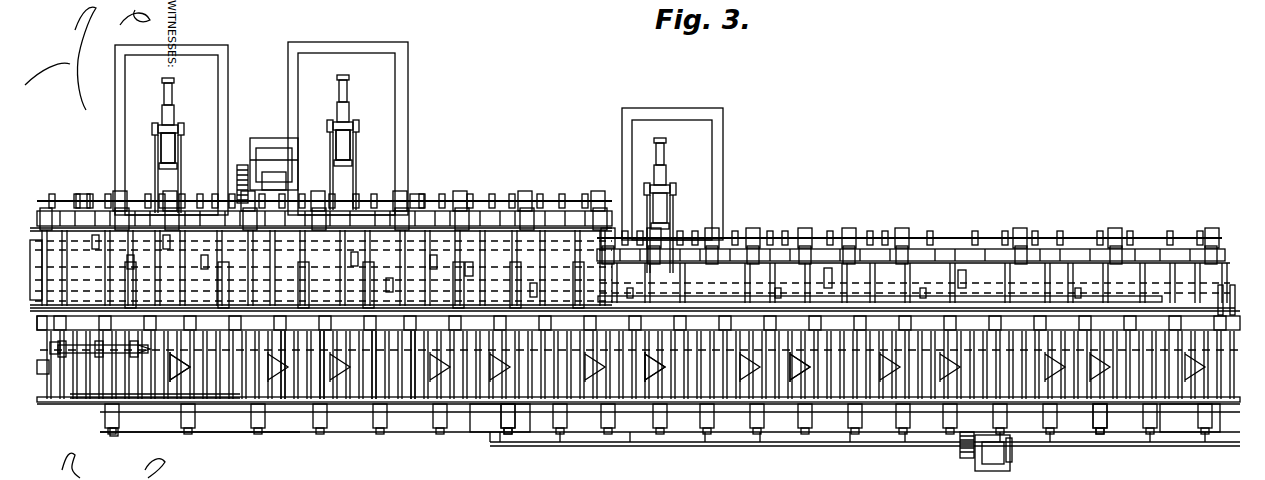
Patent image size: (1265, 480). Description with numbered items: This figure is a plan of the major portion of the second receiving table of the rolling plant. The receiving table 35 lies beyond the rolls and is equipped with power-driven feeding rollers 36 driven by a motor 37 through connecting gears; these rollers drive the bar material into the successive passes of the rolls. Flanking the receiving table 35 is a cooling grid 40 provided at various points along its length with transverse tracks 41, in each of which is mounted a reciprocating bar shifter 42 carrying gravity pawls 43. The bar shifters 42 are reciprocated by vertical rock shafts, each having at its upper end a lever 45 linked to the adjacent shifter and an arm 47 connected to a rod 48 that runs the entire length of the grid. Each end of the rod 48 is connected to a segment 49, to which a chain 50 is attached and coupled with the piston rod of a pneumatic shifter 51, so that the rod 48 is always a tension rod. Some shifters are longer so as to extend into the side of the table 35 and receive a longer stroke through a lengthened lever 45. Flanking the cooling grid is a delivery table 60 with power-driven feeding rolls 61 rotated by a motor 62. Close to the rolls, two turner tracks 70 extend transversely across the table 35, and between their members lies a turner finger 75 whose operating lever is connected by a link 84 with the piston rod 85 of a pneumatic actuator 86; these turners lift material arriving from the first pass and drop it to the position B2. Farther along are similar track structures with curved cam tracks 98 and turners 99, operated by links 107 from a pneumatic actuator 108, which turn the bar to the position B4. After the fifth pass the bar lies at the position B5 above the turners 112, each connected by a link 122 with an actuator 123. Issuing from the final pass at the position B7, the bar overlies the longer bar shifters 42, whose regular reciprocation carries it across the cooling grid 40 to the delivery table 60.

The receiving table 35 is at (417, 205).
The feeding rollers 36 is at (300, 238).
The motor 37 is at (268, 150).
The cooling grid 40 is at (375, 388).
The transverse tracks 41 is at (306, 392).
The bar shifter 42 is at (330, 392).
The gravity pawls 43 is at (205, 388).
The lever 45 is at (785, 372).
The arm 47 is at (640, 350).
The rod 48 is at (408, 355).
The segment 49 is at (172, 372).
The chain 50 is at (155, 360).
The pneumatic shifter 51 is at (78, 356).
The delivery table 60 is at (487, 422).
The feeding rolls 61 is at (518, 428).
The motor 62 is at (988, 452).
The turner tracks 70 is at (83, 197).
The turner finger 75 is at (96, 243).
The link 84 is at (160, 150).
The piston rod 85 is at (170, 115).
The pneumatic actuator 86 is at (175, 168).
The curved cam tracks 98 is at (243, 170).
The turner 99 is at (204, 263).
The links 107 is at (350, 133).
The pneumatic actuator 108 is at (343, 160).
The turner 112 is at (532, 285).
The link 122 is at (678, 227).
The actuator 123 is at (663, 220).
The bar material position B2 is at (40, 268).
The bar material position B4 is at (40, 320).
The bar material position B5 is at (52, 348).
The bar material position B7 is at (75, 335).